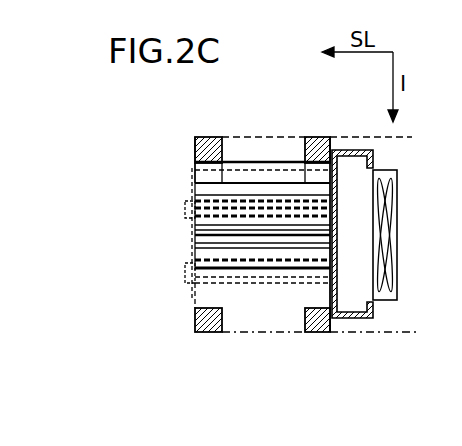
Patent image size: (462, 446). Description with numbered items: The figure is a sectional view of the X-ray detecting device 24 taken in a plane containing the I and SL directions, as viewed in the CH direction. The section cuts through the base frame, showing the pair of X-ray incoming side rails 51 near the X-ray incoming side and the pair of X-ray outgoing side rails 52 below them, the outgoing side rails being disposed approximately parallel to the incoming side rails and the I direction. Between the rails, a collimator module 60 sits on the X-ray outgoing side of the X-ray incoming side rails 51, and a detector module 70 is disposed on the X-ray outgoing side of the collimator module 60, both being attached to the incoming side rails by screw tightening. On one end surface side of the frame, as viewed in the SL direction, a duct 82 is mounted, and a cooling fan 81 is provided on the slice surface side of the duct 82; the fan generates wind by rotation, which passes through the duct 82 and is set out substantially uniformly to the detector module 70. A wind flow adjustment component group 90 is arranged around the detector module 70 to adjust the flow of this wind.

The X-ray detecting device 24 is at (262, 116).
The X-ray incoming side rail 51 is at (207, 137).
The X-ray outgoing side rail 52 is at (208, 333).
The collimator module 60 is at (195, 163).
The detector module 70 is at (193, 190).
The cooling fan 81 is at (393, 233).
The duct 82 is at (350, 150).
The wind flow adjustment component group 90 is at (185, 263).